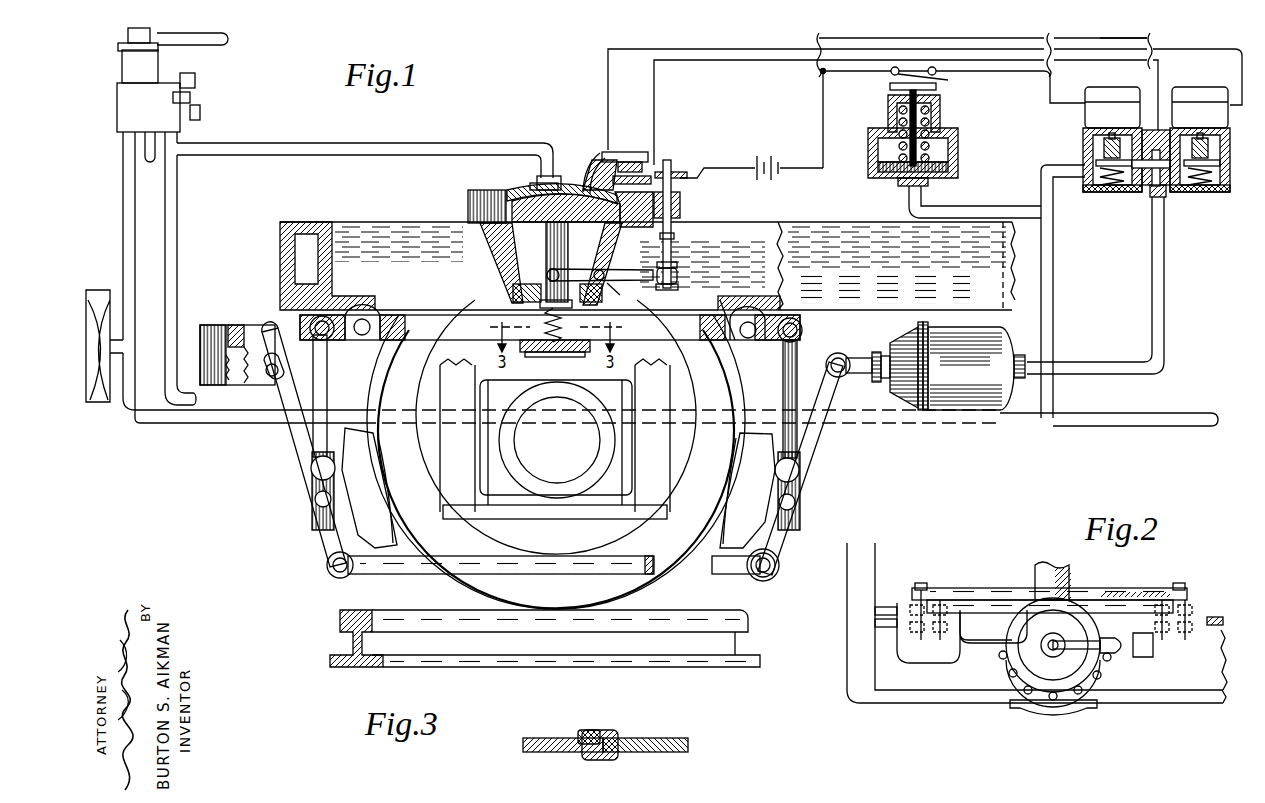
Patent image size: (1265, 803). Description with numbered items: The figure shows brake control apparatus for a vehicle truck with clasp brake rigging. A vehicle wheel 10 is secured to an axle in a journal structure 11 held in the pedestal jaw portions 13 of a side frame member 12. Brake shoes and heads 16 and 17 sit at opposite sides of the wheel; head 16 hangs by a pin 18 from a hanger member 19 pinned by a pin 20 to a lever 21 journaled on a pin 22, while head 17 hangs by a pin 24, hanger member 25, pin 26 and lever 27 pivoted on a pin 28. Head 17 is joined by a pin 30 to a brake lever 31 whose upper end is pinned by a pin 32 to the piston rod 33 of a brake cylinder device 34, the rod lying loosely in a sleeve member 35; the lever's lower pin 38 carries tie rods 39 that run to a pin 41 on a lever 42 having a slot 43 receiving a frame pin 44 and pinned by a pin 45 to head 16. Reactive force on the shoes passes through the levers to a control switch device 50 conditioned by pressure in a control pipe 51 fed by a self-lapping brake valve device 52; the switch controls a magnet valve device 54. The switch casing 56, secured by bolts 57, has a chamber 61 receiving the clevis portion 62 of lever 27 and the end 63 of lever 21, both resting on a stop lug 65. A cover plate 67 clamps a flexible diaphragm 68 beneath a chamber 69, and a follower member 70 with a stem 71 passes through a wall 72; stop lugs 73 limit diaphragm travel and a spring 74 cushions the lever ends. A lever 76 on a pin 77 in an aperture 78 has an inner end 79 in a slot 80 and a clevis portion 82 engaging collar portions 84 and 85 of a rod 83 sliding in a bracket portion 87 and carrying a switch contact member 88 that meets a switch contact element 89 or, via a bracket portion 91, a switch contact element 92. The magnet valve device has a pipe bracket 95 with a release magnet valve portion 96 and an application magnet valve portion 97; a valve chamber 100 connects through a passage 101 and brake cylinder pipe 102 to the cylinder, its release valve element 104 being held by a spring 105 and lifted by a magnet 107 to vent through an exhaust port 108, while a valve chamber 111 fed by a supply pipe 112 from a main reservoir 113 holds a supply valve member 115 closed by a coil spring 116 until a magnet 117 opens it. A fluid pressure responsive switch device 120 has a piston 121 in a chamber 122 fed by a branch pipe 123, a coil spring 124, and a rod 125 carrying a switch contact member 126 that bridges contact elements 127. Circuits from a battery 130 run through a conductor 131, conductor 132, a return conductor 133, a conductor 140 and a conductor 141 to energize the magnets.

In FIG. 1, the vehicle wheel 10 is at (676, 578).
In FIG. 2, the vehicle wheel 10 is at (990, 594).
In FIG. 1, the journal structure 11 is at (553, 492).
In FIG. 2, the journal structure 11 is at (1052, 712).
In FIG. 1, the side frame member 12 is at (380, 222).
In FIG. 2, the side frame member 12 is at (935, 690).
In FIG. 1, the pedestal jaw portions 13 is at (615, 443).
In FIG. 1, the brake shoe and head 16 is at (388, 530).
In FIG. 1, the brake shoe and head 17 is at (752, 518).
In FIG. 1, the pin 18 is at (311, 462).
In FIG. 1, the hanger member 19 is at (328, 385).
In FIG. 1, the pin 20 is at (312, 326).
In FIG. 1, the lever 21 is at (397, 320).
In FIG. 2, the lever 21 is at (980, 645).
In FIG. 3, the lever 21 is at (540, 737).
In FIG. 1, the pin 22 is at (362, 318).
In FIG. 1, the pin 24 is at (800, 470).
In FIG. 1, the hanger member 25 is at (797, 358).
In FIG. 1, the pin 26 is at (787, 322).
In FIG. 1, the lever 27 is at (735, 305).
In FIG. 2, the lever 27 is at (1150, 658).
In FIG. 1, the pin 28 is at (748, 322).
In FIG. 1, the pin 30 is at (796, 504).
In FIG. 1, the brake lever 31 is at (823, 440).
In FIG. 1, the pin 32 is at (841, 357).
In FIG. 1, the piston rod 33 is at (858, 374).
In FIG. 1, the brake cylinder device 34 is at (975, 412).
In FIG. 1, the sleeve member 35 is at (879, 351).
In FIG. 1, the pin 38 is at (779, 571).
In FIG. 2, the pin 38 is at (1180, 590).
In FIG. 1, the tie rods 39 is at (648, 558).
In FIG. 2, the tie rods 39 is at (1110, 590).
In FIG. 1, the pin 41 is at (330, 568).
In FIG. 2, the pin 41 is at (920, 590).
In FIG. 1, the lever 42 is at (322, 530).
In FIG. 2, the lever 42 is at (888, 600).
In FIG. 1, the slot 43 is at (270, 358).
In FIG. 1, the pin 44 is at (268, 376).
In FIG. 2, the pin 44 is at (882, 635).
In FIG. 1, the pin 45 is at (314, 490).
In FIG. 1, the control switch device 50 is at (466, 203).
In FIG. 1, the control pipe 51 is at (208, 147).
In FIG. 1, the self-lapping brake valve device 52 is at (188, 78).
In FIG. 1, the magnet valve device 54 is at (1166, 200).
In FIG. 1, the casing 56 is at (500, 248).
In FIG. 2, the bolts 57 is at (1020, 660).
In FIG. 1, the chamber 61 is at (602, 293).
In FIG. 3, the clevis portion 62 is at (606, 731).
In FIG. 3, the end 63 is at (590, 730).
In FIG. 1, the stop lug 65 is at (556, 342).
In FIG. 1, the cover plate 67 is at (520, 190).
In FIG. 2, the cover plate 67 is at (1030, 690).
In FIG. 1, the flexible diaphragm 68 is at (590, 162).
In FIG. 1, the chamber 69 is at (534, 184).
In FIG. 1, the follower member 70 is at (515, 232).
In FIG. 1, the stem 71 is at (560, 242).
In FIG. 1, the wall 72 is at (512, 292).
In FIG. 1, the stop lugs 73 is at (557, 172).
In FIG. 1, the spring 74 is at (545, 352).
In FIG. 1, the lever 76 is at (615, 284).
In FIG. 1, the pin 77 is at (603, 272).
In FIG. 1, the aperture 78 is at (618, 248).
In FIG. 1, the inner end 79 is at (552, 264).
In FIG. 1, the slot 80 is at (547, 277).
In FIG. 1, the clevis portion 82 is at (679, 276).
In FIG. 1, the rod 83 is at (674, 238).
In FIG. 1, the collar portion 84 is at (679, 262).
In FIG. 1, the collar portion 85 is at (679, 289).
In FIG. 1, the bracket portion 87 is at (681, 205).
In FIG. 1, the switch contact member 88 is at (668, 170).
In FIG. 2, the switch contact member 88 is at (1112, 656).
In FIG. 1, the switch contact element 89 is at (596, 155).
In FIG. 1, the bracket portion 91 is at (618, 152).
In FIG. 1, the switch contact element 92 is at (636, 162).
In FIG. 1, the pipe bracket 95 is at (1156, 132).
In FIG. 1, the release magnet valve portion 96 is at (1226, 135).
In FIG. 1, the application magnet valve portion 97 is at (1086, 128).
In FIG. 1, the valve chamber 100 is at (1222, 186).
In FIG. 1, the passage 101 is at (1136, 188).
In FIG. 1, the brake cylinder pipe 102 is at (1166, 275).
In FIG. 1, the release valve element 104 is at (1216, 165).
In FIG. 1, the spring 105 is at (1205, 192).
In FIG. 1, the magnet 107 is at (1222, 106).
In FIG. 1, the exhaust port 108 is at (1222, 148).
In FIG. 1, the valve chamber 111 is at (1098, 170).
In FIG. 1, the supply pipe 112 is at (215, 415).
In FIG. 1, the main reservoir 113 is at (98, 405).
In FIG. 1, the supply valve member 115 is at (1100, 146).
In FIG. 1, the coil spring 116 is at (1108, 185).
In FIG. 1, the magnet 117 is at (1088, 105).
In FIG. 1, the fluid pressure responsive switch device 120 is at (960, 135).
In FIG. 1, the piston 121 is at (870, 157).
In FIG. 1, the chamber 122 is at (930, 176).
In FIG. 1, the branch pipe 123 is at (1060, 228).
In FIG. 1, the coil spring 124 is at (888, 108).
In FIG. 1, the rod 125 is at (918, 96).
In FIG. 1, the switch contact member 126 is at (888, 82).
In FIG. 1, the contact elements 127 is at (938, 74).
In FIG. 1, the battery 130 is at (768, 154).
In FIG. 1, the conductor 131 is at (822, 96).
In FIG. 1, the conductor 132 is at (1110, 52).
In FIG. 1, the return conductor 133 is at (702, 166).
In FIG. 1, the conductor 140 is at (1005, 71).
In FIG. 1, the conductor 141 is at (1218, 54).